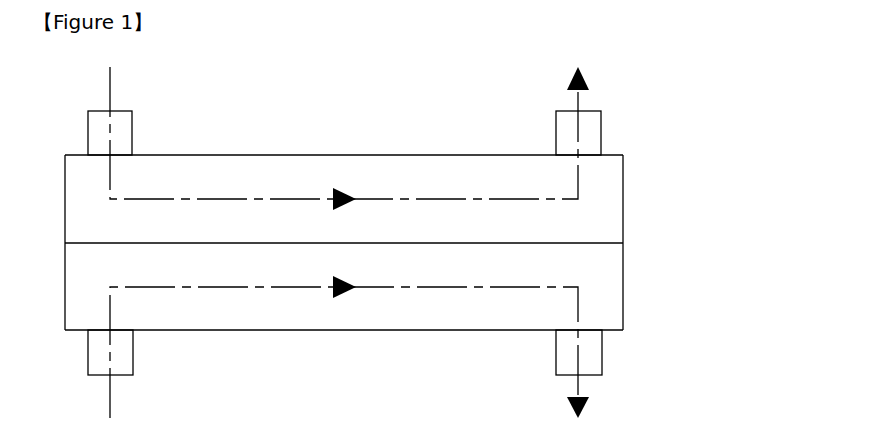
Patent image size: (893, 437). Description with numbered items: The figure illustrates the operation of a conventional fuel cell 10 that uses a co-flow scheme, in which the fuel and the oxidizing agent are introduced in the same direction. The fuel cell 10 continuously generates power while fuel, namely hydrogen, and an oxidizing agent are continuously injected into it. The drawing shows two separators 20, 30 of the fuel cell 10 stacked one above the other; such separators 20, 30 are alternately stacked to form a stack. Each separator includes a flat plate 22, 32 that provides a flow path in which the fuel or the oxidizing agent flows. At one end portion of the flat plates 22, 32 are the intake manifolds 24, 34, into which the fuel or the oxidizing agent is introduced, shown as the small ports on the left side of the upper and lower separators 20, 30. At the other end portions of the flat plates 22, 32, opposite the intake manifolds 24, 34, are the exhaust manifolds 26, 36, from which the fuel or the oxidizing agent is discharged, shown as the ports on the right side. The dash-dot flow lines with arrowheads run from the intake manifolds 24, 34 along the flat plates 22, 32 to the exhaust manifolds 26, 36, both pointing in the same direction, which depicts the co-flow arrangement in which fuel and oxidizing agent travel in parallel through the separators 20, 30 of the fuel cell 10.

The fuel cell 10 is at (417, 242).
The separator 20 is at (377, 155).
The flat plate 22 is at (490, 154).
The intake manifold 24 is at (88, 132).
The exhaust manifold 26 is at (601, 131).
The separator 30 is at (377, 347).
The flat plate 32 is at (492, 331).
The intake manifold 34 is at (88, 352).
The exhaust manifold 36 is at (602, 352).